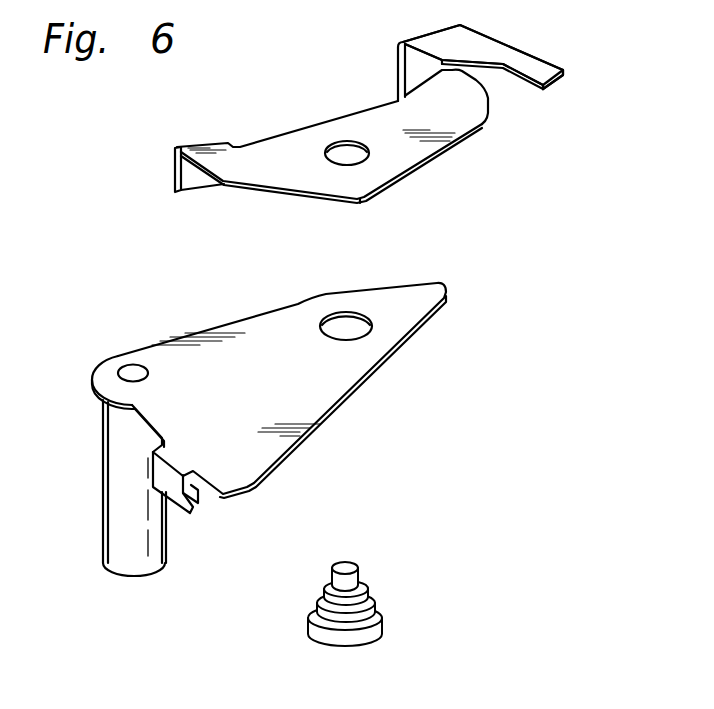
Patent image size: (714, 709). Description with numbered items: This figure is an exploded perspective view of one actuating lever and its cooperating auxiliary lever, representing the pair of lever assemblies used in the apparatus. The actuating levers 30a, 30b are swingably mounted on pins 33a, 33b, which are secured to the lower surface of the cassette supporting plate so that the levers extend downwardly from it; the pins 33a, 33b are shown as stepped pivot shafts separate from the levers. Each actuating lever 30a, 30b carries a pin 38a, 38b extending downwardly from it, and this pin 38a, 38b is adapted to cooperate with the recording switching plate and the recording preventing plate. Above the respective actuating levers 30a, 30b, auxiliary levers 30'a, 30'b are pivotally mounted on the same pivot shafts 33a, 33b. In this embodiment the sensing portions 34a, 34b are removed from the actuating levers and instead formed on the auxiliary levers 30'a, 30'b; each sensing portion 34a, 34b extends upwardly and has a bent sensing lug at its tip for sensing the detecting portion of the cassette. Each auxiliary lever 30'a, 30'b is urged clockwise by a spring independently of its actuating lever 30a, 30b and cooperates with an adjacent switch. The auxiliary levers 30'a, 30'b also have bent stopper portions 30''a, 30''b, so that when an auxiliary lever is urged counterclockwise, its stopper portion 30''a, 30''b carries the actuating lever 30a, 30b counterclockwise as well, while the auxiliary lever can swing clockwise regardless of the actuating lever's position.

The actuating lever 30a is at (269, 394).
The actuating lever 30b is at (217, 350).
The auxiliary lever 30'a is at (370, 114).
The auxiliary lever 30'b is at (370, 114).
The bent stopper portion 30''a is at (142, 170).
The bent stopper portion 30''b is at (142, 170).
The sensing portion 34a is at (514, 51).
The sensing portion 34b is at (494, 46).
The pin 38a is at (140, 509).
The pin 38b is at (125, 565).
The pin 33a is at (404, 609).
The pin 33b is at (340, 633).